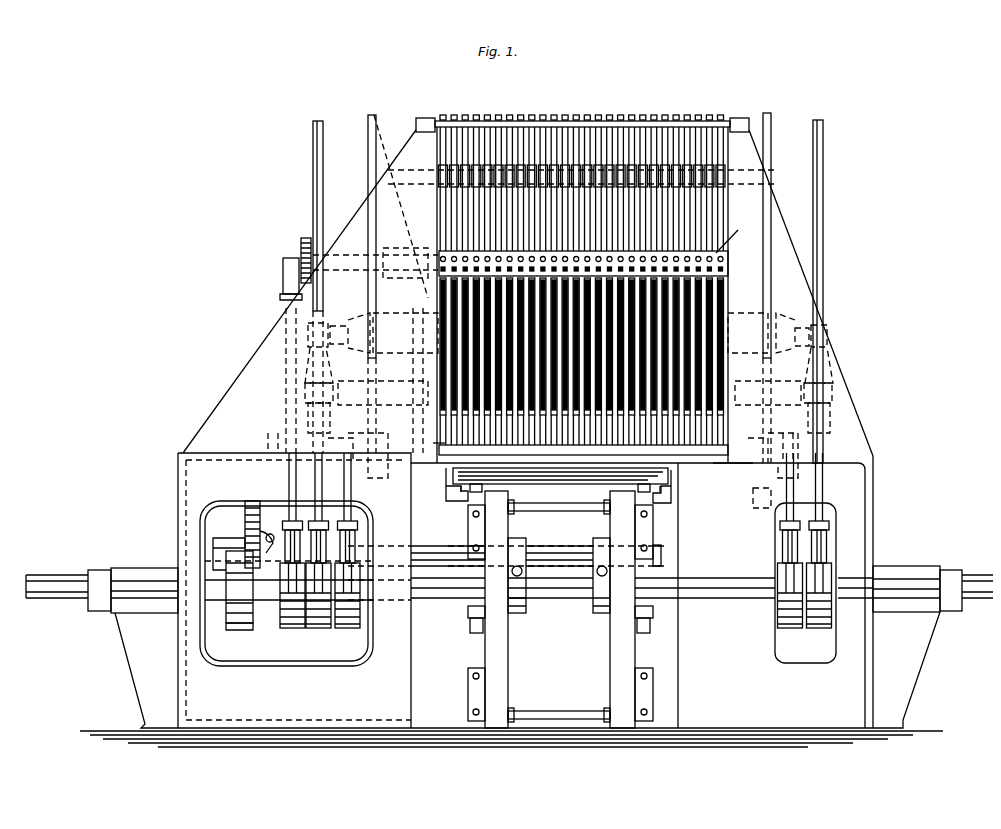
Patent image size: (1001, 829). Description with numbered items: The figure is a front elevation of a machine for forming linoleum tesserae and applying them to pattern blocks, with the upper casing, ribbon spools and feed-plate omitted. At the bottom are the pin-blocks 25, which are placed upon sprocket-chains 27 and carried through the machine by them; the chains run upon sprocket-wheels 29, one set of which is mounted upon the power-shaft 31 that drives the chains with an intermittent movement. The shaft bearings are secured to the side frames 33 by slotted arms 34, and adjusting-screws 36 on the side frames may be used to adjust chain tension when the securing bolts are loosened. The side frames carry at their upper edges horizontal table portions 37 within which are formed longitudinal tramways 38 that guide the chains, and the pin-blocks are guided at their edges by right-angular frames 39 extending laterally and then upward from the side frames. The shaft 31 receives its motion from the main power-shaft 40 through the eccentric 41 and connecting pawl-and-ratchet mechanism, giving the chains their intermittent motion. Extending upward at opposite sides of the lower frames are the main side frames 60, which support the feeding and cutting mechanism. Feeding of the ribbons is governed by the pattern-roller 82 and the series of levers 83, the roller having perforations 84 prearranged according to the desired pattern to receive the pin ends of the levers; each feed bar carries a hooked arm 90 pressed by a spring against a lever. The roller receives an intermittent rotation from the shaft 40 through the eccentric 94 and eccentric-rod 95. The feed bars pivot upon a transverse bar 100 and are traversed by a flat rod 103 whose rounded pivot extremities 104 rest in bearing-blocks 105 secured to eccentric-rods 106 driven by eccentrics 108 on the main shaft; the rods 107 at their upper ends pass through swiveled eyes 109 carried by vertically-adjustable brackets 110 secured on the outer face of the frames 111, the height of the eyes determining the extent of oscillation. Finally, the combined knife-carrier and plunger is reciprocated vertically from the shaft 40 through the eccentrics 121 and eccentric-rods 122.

The pin-blocks 25 is at (565, 470).
The sprocket-chains 27 is at (465, 626).
The sprocket-wheels 29 is at (462, 608).
The power-shaft 31 is at (408, 545).
The side frames 33 is at (560, 609).
The arms 34 is at (509, 604).
The adjusting-screws 36 is at (505, 566).
The table portions 37 is at (450, 488).
The tramways 38 is at (467, 484).
The right-angular frames 39 is at (436, 476).
The main power-shaft 40 is at (509, 637).
The eccentric 41 is at (243, 574).
The main side frames 60 is at (410, 124).
The pattern-roller 82 is at (738, 233).
The levers 83 is at (520, 132).
The perforations 84 is at (428, 440).
The arm 90 is at (422, 362).
The eccentric 94 is at (286, 605).
The eccentric-rod 95 is at (282, 360).
The bar 100 is at (570, 333).
The flat rod 103 is at (569, 393).
The pivot extremities 104 is at (296, 386).
The bearing-blocks 105 is at (322, 358).
The eccentric-rods 106 is at (305, 466).
The rods 107 is at (305, 166).
The eccentrics 108 is at (312, 626).
The swiveled eyes 109 is at (298, 314).
The vertically-adjustable brackets 110 is at (568, 324).
The frames 111 is at (360, 128).
The eccentrics 121 is at (338, 632).
The eccentric-rods 122 is at (348, 503).